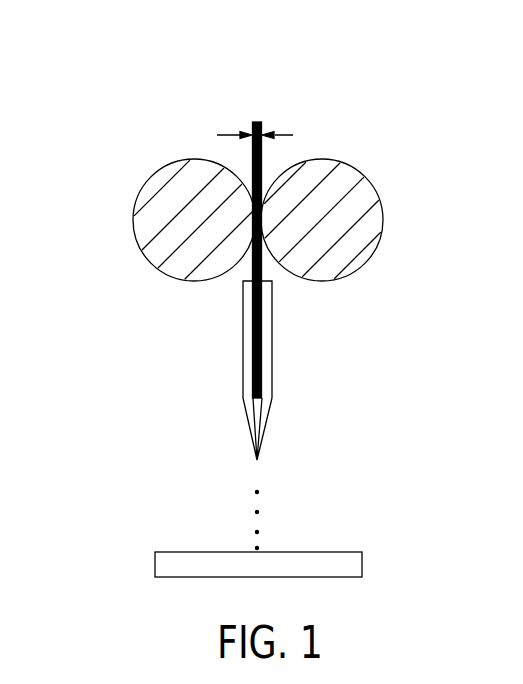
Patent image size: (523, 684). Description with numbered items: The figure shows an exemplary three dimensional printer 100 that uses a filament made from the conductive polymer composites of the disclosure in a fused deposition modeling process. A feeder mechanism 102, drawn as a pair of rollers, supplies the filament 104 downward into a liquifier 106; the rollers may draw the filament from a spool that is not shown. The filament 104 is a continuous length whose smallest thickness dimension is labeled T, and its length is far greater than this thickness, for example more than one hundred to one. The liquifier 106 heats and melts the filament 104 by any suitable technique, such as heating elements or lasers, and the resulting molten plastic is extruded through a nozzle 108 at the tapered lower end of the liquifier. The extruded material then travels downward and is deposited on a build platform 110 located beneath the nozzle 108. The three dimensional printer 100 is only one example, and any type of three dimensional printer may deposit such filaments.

The three dimensional printer 100 is at (132, 79).
The feeder mechanism 102 is at (350, 163).
The filament 104 is at (257, 123).
The liquifier 106 is at (243, 340).
The nozzle 108 is at (265, 430).
The build platform 110 is at (362, 565).